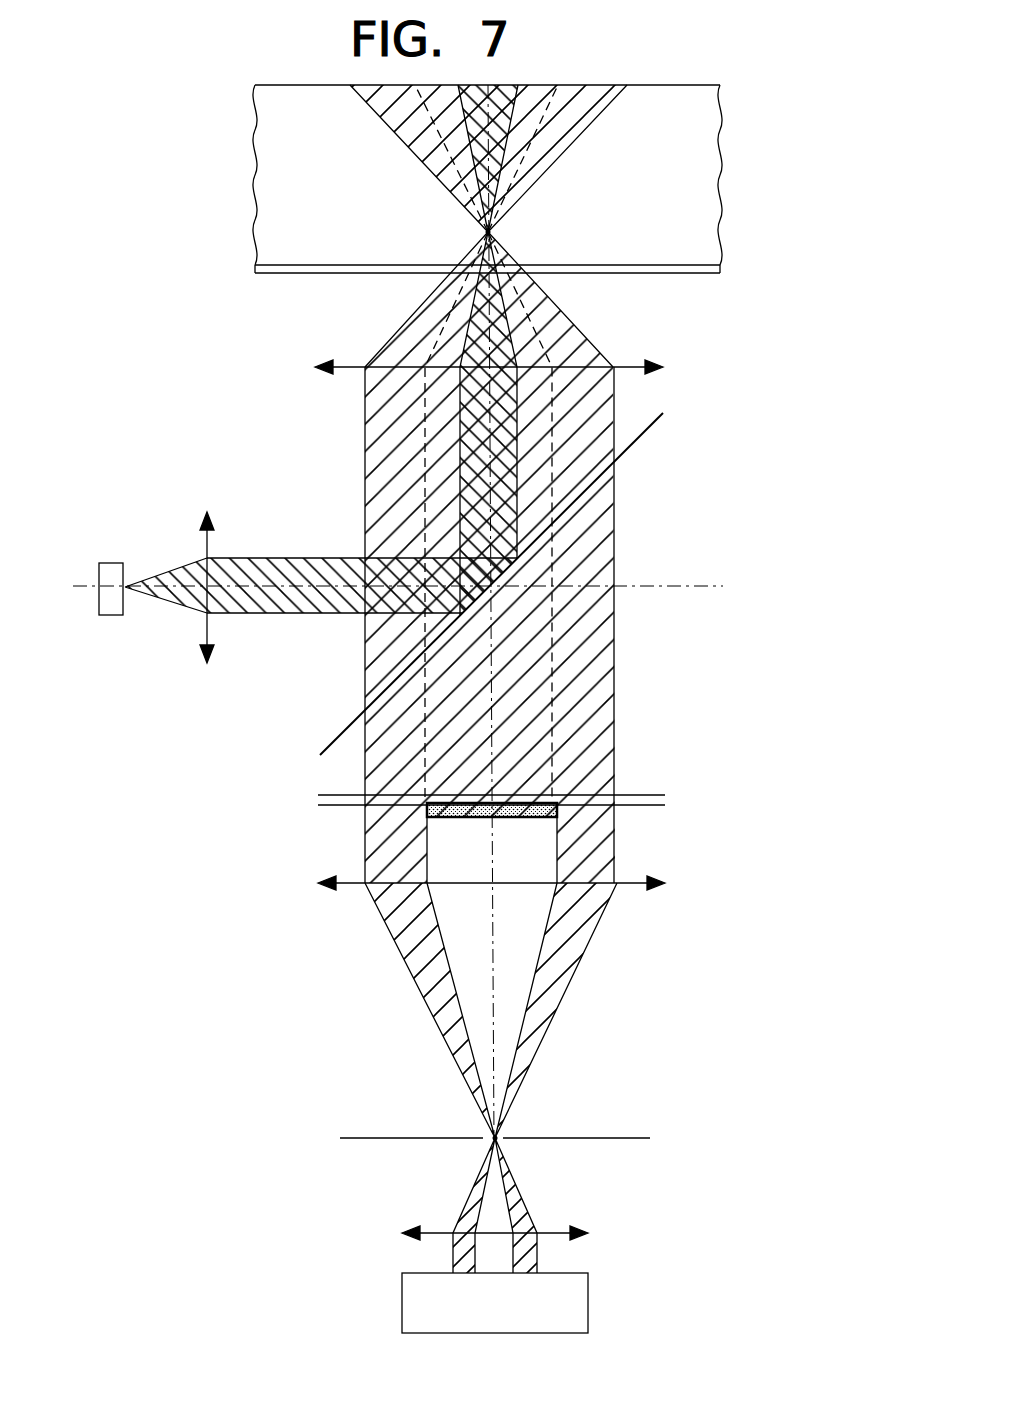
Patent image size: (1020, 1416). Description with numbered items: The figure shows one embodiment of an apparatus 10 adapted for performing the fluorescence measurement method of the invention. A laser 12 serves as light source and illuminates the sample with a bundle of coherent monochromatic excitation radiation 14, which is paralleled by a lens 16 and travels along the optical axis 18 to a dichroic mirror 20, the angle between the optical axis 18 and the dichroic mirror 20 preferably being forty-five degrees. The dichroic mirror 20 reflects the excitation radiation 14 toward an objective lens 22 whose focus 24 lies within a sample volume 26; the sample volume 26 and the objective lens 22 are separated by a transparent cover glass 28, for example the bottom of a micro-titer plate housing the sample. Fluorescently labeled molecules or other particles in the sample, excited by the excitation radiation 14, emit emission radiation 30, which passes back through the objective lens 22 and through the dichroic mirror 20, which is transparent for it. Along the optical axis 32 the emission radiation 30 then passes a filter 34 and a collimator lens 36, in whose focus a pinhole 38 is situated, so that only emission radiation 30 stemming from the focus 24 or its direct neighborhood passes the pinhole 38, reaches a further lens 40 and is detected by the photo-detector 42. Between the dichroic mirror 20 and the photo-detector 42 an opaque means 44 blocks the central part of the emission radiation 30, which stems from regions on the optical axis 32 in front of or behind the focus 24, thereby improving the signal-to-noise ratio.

The apparatus 10 is at (234, 351).
The laser 12 is at (102, 617).
The excitation radiation 14 is at (273, 605).
The lens 16 is at (210, 541).
The optical axis 18 is at (701, 588).
The dichroic mirror 20 is at (648, 427).
The objective lens 22 is at (632, 367).
The focus 24 is at (500, 232).
The sample volume 26 is at (695, 137).
The transparent cover glass 28 is at (286, 276).
The emission radiation 30 is at (612, 525).
The optical axis 32 is at (495, 860).
The filter 34 is at (640, 796).
The collimator lens 36 is at (630, 886).
The pinhole 38 is at (606, 1138).
The further lens 40 is at (553, 1232).
The photo-detector 42 is at (588, 1300).
The opaque means 44 is at (450, 818).